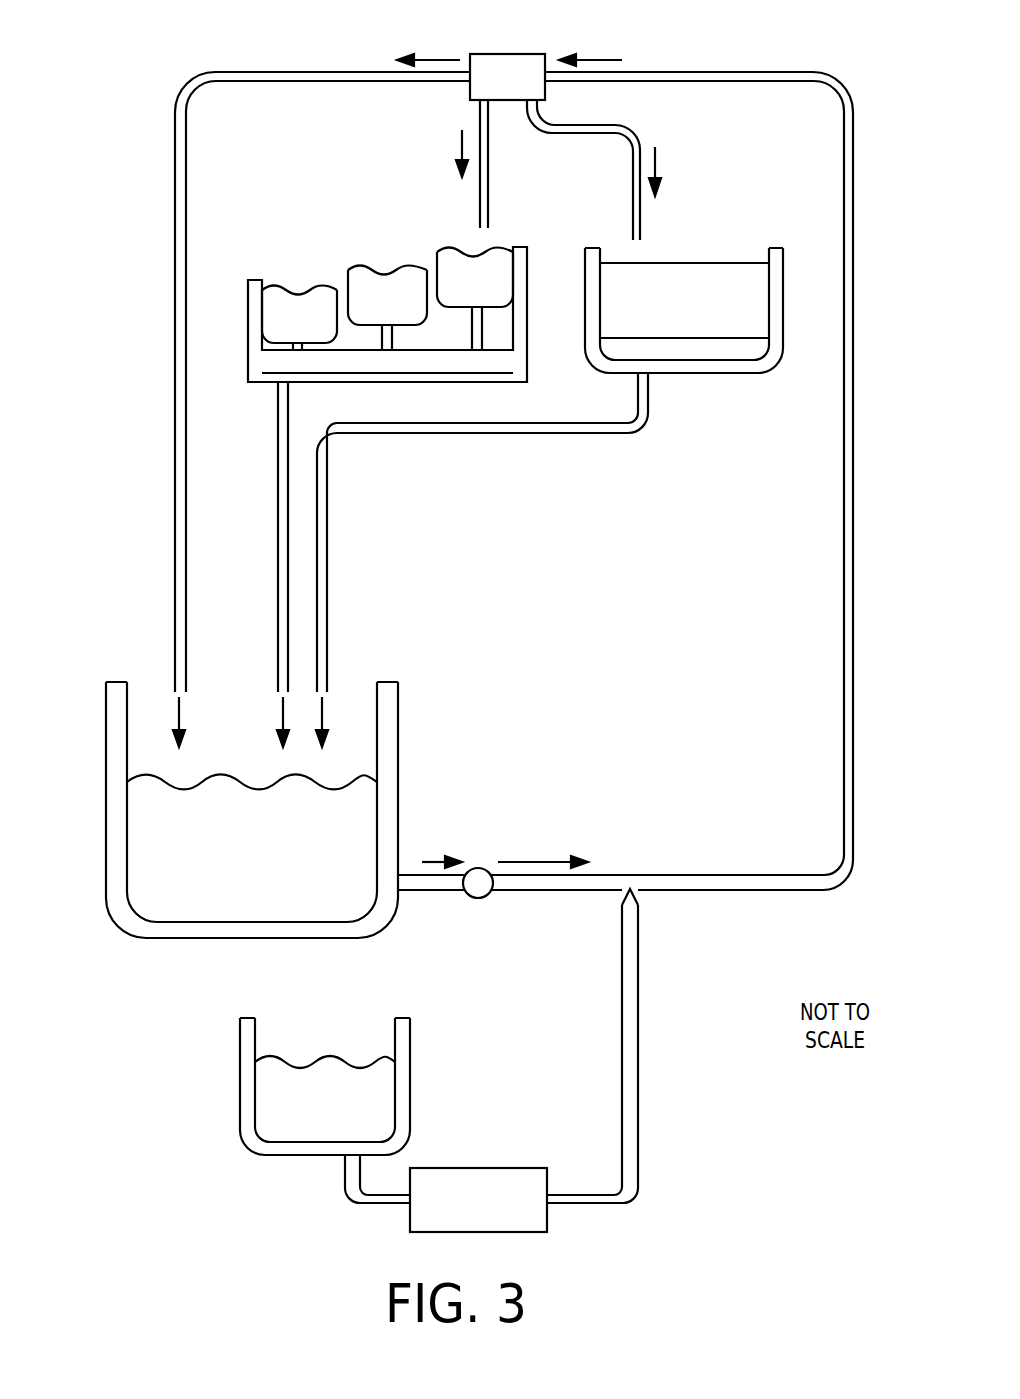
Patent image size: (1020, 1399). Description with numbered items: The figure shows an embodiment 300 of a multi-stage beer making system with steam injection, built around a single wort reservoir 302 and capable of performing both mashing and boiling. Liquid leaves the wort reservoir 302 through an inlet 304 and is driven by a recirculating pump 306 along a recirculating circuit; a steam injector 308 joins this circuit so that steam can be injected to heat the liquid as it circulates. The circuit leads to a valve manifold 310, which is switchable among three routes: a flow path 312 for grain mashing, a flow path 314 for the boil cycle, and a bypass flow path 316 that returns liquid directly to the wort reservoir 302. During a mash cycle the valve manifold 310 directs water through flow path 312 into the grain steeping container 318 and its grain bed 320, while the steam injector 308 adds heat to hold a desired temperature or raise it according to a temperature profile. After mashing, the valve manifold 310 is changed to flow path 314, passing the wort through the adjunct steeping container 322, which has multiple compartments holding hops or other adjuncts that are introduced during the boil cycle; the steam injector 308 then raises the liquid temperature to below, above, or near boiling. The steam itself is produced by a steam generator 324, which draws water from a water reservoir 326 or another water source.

The embodiment 300 is at (455, 660).
The wort reservoir 302 is at (398, 712).
The inlet 304 is at (398, 875).
The recirculating pump 306 is at (483, 868).
The steam injector 308 is at (640, 902).
The valve manifold 310 is at (487, 54).
The flow path 312 is at (617, 170).
The flow path 314 is at (450, 164).
The bypass flow path 316 is at (288, 72).
The grain steeping container 318 is at (688, 373).
The grain bed 320 is at (684, 300).
The adjunct steeping container 322 is at (407, 252).
The steam generator 324 is at (522, 1232).
The water reservoir 326 is at (278, 1155).